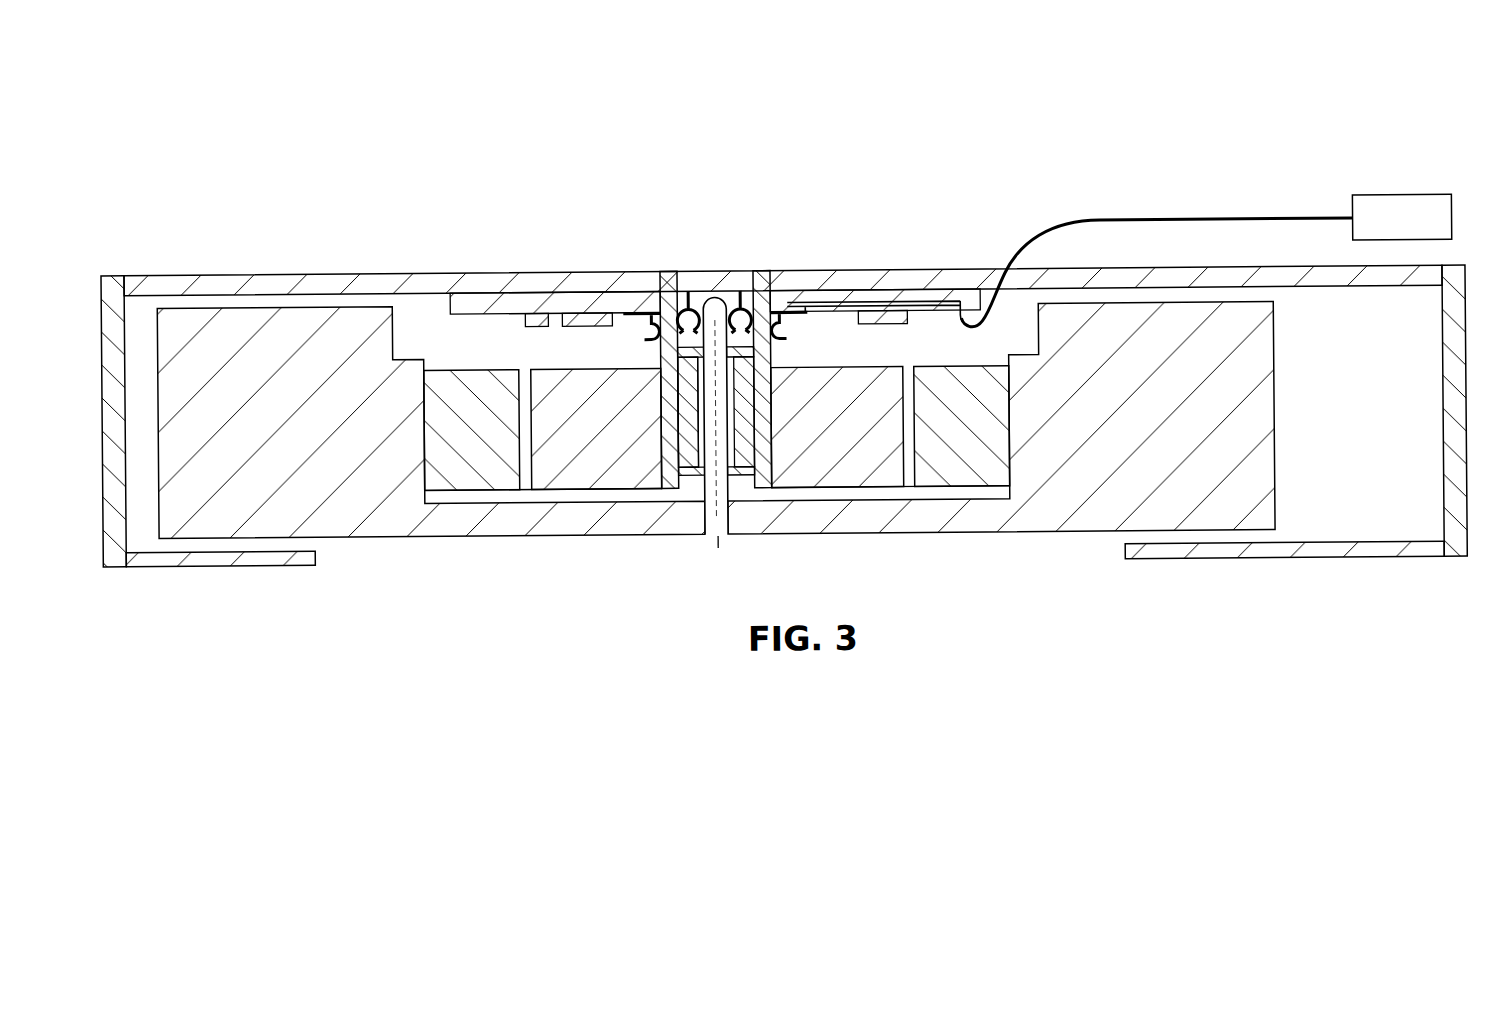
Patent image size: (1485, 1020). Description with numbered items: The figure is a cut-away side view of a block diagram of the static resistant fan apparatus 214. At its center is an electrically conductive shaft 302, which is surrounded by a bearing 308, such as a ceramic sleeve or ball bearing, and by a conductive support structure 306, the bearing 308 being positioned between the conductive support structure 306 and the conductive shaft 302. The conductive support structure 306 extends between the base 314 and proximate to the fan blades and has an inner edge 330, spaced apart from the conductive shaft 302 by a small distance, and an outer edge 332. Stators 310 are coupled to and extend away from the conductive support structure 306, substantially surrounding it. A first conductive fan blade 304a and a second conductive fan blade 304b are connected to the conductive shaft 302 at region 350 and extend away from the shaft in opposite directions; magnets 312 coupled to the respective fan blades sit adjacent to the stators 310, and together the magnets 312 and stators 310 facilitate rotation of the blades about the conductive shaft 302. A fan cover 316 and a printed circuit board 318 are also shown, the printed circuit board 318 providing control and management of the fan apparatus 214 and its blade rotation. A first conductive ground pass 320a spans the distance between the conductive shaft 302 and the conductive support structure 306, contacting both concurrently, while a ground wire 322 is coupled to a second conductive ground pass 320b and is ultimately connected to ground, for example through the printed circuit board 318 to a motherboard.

The static resistant fan apparatus 214 is at (783, 351).
The electrically conductive shaft 302 is at (713, 395).
The first conductive fan blade 304a is at (400, 531).
The second conductive fan blade 304b is at (1040, 532).
The conductive support structure 306 is at (667, 295).
The bearing 308 is at (748, 446).
The stators 310 is at (612, 481).
The magnets 312 is at (485, 483).
The base 314 is at (279, 277).
The fan cover 316 is at (200, 569).
The printed circuit board 318 is at (897, 300).
The first conductive ground pass 320a is at (688, 300).
The second conductive ground pass 320b is at (646, 328).
The ground wire 322 is at (1172, 226).
The inner edge 330 is at (682, 434).
The outer edge 332 is at (800, 482).
The region 350 is at (716, 553).